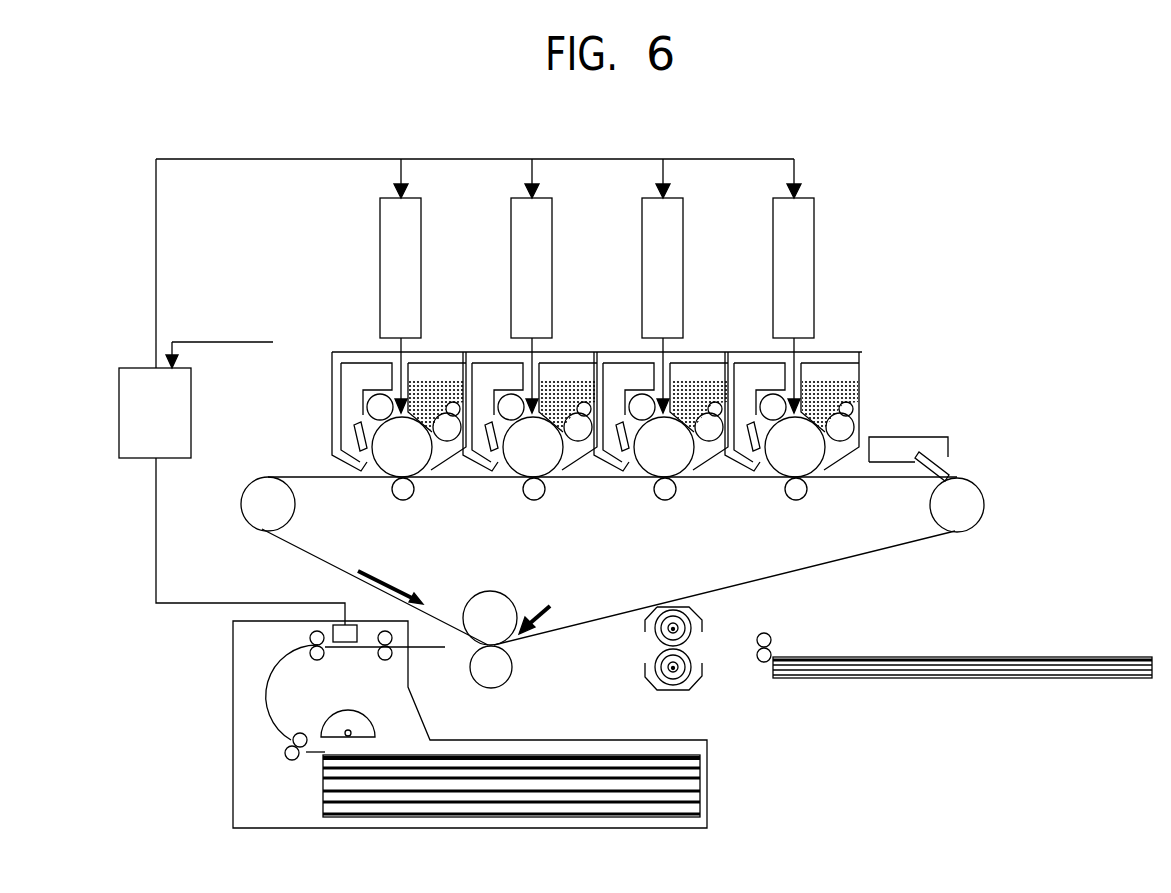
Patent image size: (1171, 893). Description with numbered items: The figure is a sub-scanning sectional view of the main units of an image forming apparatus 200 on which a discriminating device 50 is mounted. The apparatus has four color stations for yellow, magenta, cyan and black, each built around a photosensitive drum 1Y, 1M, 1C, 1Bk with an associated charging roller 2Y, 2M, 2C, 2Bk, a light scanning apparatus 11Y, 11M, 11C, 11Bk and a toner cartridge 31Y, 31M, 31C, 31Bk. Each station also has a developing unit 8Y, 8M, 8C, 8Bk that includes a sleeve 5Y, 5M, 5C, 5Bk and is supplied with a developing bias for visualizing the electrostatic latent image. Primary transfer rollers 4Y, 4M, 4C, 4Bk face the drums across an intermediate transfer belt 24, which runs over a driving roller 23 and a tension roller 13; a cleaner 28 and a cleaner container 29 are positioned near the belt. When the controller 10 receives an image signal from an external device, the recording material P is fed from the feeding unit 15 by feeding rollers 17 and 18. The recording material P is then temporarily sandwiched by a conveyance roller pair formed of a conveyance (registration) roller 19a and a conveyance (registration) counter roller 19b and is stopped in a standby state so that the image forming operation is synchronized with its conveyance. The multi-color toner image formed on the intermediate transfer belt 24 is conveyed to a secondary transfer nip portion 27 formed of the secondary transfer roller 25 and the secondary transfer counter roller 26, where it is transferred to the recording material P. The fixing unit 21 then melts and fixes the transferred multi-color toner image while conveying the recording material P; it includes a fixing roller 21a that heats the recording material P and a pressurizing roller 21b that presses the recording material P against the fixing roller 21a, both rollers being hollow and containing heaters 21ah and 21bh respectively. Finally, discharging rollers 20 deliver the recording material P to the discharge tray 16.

The image forming apparatus 200 is at (978, 265).
The controller 10 is at (191, 403).
The light scanning apparatus 11Bk is at (380, 238).
The light scanning apparatus 11C is at (511, 238).
The light scanning apparatus 11M is at (642, 238).
The light scanning apparatus 11Y is at (773, 238).
The toner cartridge 31Bk is at (341, 362).
The toner cartridge 31C is at (472, 362).
The toner cartridge 31M is at (603, 362).
The toner cartridge 31Y is at (734, 362).
The charging roller 2Bk is at (375, 395).
The charging roller 2C is at (506, 395).
The charging roller 2M is at (637, 395).
The charging roller 2Y is at (768, 395).
The developing unit 8Bk is at (442, 378).
The developing unit 8C is at (573, 378).
The developing unit 8M is at (704, 378).
The developing unit 8Y is at (835, 378).
The photosensitive drum 1Bk is at (381, 470).
The photosensitive drum 1C is at (512, 470).
The photosensitive drum 1M is at (643, 470).
The photosensitive drum 1Y is at (774, 470).
The sleeve 5Bk is at (447, 455).
The sleeve 5C is at (578, 455).
The sleeve 5M is at (709, 455).
The sleeve 5Y is at (840, 455).
The primary transfer roller 4Bk is at (403, 490).
The primary transfer roller 4C is at (534, 490).
The primary transfer roller 4M is at (665, 490).
The primary transfer roller 4Y is at (796, 490).
The cleaner container 29 is at (932, 437).
The cleaner 28 is at (950, 470).
The tension roller 13 is at (968, 518).
The driving roller 23 is at (252, 504).
The intermediate transfer belt 24 is at (288, 548).
The secondary transfer counter roller 26 is at (478, 605).
The secondary transfer roller 25 is at (497, 677).
The secondary transfer nip portion 27 is at (553, 609).
The recording material P is at (434, 650).
The conveyance (registration) roller 19a is at (385, 662).
The conveyance (registration) counter roller 19b is at (378, 630).
The feeding roller 18 is at (310, 638).
The discriminating device 50 is at (345, 644).
The feeding roller 17 is at (293, 762).
The feeding unit 15 is at (465, 838).
The fixing unit 21 is at (695, 688).
The fixing roller 21a is at (652, 628).
The heater 21ah is at (662, 633).
The pressurizing roller 21b is at (652, 670).
The heater 21bh is at (660, 675).
The discharging rollers 20 is at (766, 665).
The discharge tray 16 is at (955, 680).